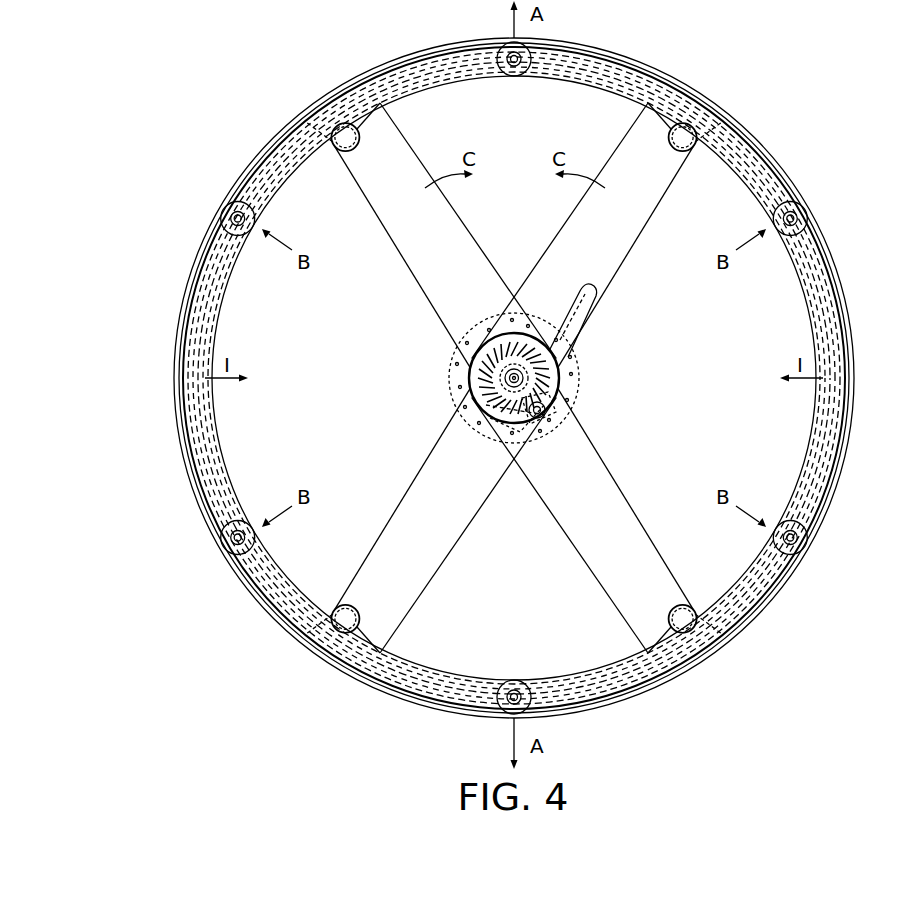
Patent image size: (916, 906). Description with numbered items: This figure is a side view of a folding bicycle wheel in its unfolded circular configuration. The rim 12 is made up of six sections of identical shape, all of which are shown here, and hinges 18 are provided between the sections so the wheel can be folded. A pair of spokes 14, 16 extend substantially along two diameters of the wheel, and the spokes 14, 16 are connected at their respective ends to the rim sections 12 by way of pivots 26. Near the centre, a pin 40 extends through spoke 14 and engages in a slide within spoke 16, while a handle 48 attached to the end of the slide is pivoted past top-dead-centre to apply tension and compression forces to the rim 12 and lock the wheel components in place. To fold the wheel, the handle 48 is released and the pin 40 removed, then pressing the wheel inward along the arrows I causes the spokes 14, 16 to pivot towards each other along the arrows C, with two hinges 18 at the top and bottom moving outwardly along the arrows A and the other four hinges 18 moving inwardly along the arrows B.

The rim 12 is at (360, 76).
The spoke 14 is at (585, 550).
The spoke 16 is at (443, 550).
The hinge 18 is at (514, 77).
The pivot 26 is at (340, 150).
The pin 40 is at (558, 400).
The handle 48 is at (592, 302).